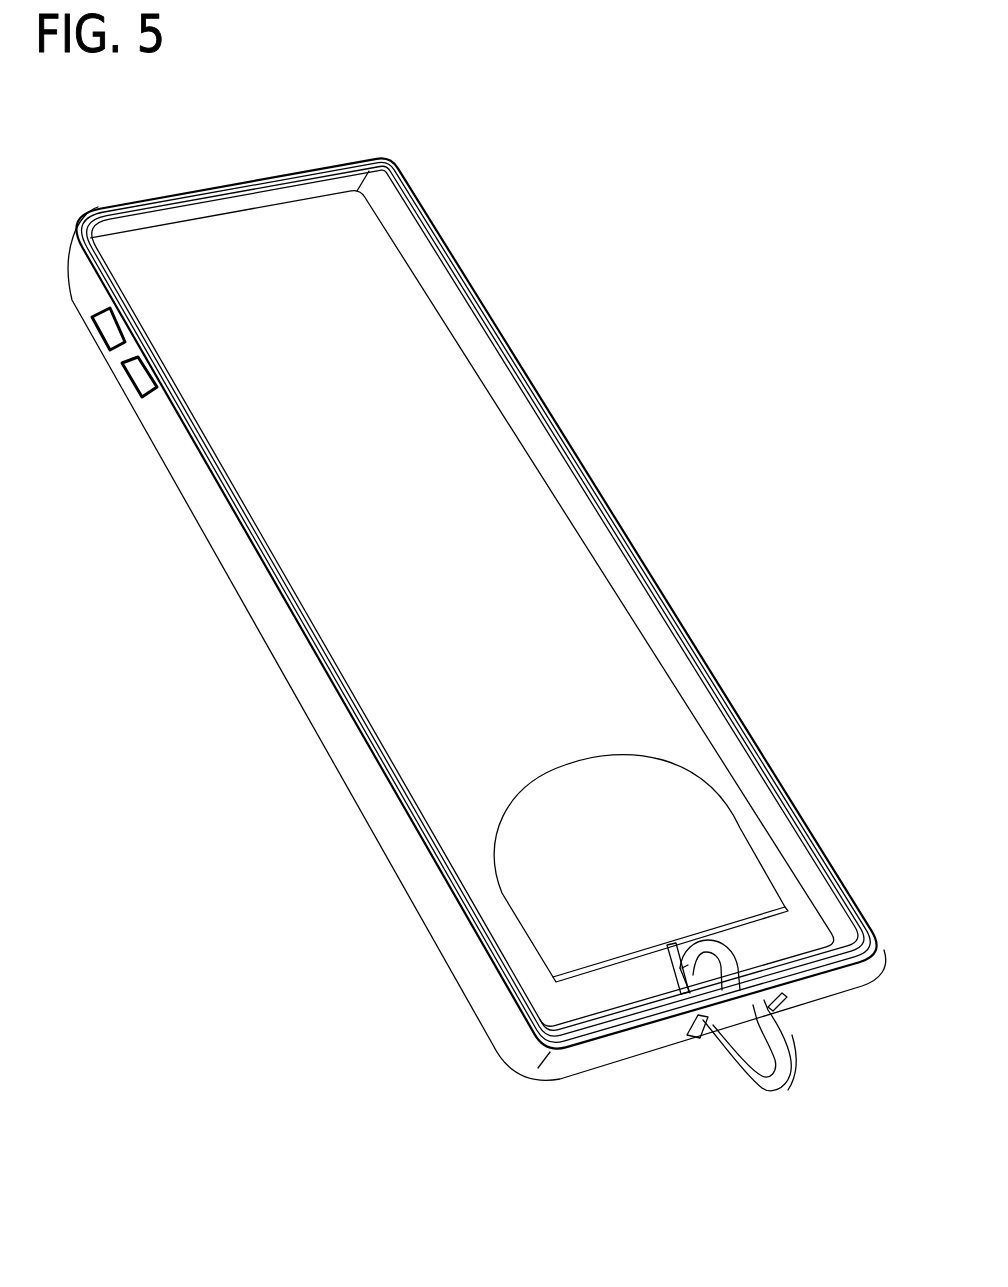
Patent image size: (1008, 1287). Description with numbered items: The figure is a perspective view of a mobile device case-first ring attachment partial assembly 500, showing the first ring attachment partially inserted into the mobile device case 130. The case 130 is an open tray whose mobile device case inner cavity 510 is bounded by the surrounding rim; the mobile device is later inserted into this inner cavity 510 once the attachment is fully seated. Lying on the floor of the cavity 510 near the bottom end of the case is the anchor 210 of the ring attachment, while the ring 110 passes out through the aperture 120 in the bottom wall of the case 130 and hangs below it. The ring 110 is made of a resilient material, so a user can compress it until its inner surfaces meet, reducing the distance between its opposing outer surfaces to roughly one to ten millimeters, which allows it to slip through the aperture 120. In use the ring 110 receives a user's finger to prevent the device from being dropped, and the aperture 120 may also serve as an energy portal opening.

The mobile device case-first ring attachment partial assembly 500 is at (404, 146).
The mobile device case 130 is at (463, 268).
The mobile device case inner cavity 510 is at (458, 470).
The anchor 210 is at (650, 871).
The ring 110 is at (796, 1062).
The aperture 120 is at (790, 1000).